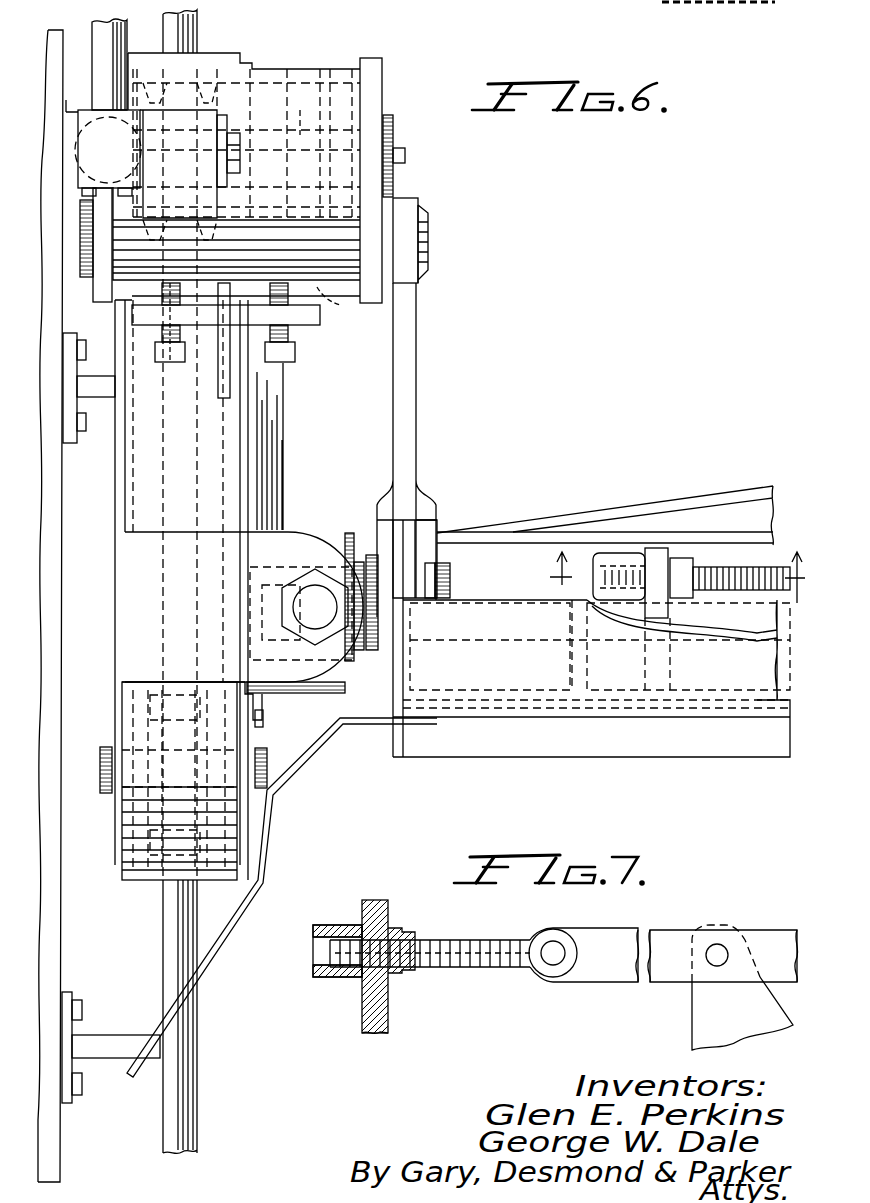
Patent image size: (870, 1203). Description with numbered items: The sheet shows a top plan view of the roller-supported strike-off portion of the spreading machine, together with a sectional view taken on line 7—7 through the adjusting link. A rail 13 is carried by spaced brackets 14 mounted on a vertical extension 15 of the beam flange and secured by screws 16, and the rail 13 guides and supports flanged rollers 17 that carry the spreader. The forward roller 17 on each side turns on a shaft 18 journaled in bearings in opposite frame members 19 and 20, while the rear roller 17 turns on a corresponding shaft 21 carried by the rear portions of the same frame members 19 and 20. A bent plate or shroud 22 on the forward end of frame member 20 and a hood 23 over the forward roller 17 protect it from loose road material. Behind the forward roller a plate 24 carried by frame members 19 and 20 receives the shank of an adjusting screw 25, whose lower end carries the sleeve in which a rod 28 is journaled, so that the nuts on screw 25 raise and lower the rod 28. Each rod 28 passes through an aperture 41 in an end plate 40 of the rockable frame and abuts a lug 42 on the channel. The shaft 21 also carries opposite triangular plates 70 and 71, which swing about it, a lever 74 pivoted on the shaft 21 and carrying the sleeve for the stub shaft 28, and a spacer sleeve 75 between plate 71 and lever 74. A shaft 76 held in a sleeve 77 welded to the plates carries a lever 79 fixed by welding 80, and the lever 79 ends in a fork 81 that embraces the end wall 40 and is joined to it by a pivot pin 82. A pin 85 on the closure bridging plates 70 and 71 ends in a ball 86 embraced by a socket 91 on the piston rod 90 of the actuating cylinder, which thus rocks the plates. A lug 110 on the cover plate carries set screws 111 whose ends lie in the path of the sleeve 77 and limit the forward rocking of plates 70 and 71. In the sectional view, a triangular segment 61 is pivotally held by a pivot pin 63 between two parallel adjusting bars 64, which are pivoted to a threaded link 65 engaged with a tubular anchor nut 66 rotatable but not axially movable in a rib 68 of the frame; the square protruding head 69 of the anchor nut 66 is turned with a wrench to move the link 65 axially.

In FIG. 6, the section line 7— 7 is at (667, 590).
In FIG. 6, the rail 13 is at (165, 930).
In FIG. 6, the bracket 14 is at (92, 398).
In FIG. 6, the vertical extension 15 is at (65, 450).
In FIG. 6, the screw 16 is at (72, 433).
In FIG. 6, the flanged roller 17 is at (158, 232).
In FIG. 6, the shaft 18 is at (267, 762).
In FIG. 6, the frame member 19 is at (115, 695).
In FIG. 6, the frame member 20 is at (245, 693).
In FIG. 6, the shaft 21 is at (322, 135).
In FIG. 6, the bent plate or shroud 22 is at (255, 880).
In FIG. 6, the hood 23 is at (150, 878).
In FIG. 6, the plate 24 is at (294, 548).
In FIG. 6, the adjusting screw 25 is at (310, 600).
In FIG. 6, the rod 28 is at (522, 642).
In FIG. 6, the end plate 40 is at (415, 652).
In FIG. 6, the aperture 41 is at (386, 655).
In FIG. 6, the lug 42 is at (587, 655).
In FIG. 7, the triangular segment 61 is at (692, 1010).
In FIG. 7, the pivot pin 63 is at (718, 946).
In FIG. 7, the adjusting bar 64 is at (605, 940).
In FIG. 7, the threaded link 65 is at (500, 966).
In FIG. 7, the tubular anchor nut 66 is at (396, 926).
In FIG. 6, the rib 68 is at (660, 612).
In FIG. 7, the rib 68 is at (390, 995).
In FIG. 6, the protruding head 69 is at (618, 558).
In FIG. 7, the protruding head 69 is at (333, 925).
In FIG. 6, the triangular shaped plate 70 is at (87, 300).
In FIG. 6, the triangular shaped plate 71 is at (383, 97).
In FIG. 6, the lever 74 is at (280, 452).
In FIG. 6, the spacer sleeve 75 is at (328, 135).
In FIG. 6, the shaft 76 is at (332, 290).
In FIG. 6, the sleeve 77 is at (320, 320).
In FIG. 6, the lever 79 is at (416, 375).
In FIG. 6, the welding 80 is at (425, 273).
In FIG. 6, the fork 81 is at (425, 522).
In FIG. 6, the pivot pin 82 is at (450, 578).
In FIG. 6, the pin 85 is at (238, 160).
In FIG. 6, the ball 86 is at (80, 135).
In FIG. 6, the piston rod 90 is at (92, 30).
In FIG. 6, the socket 91 is at (78, 115).
In FIG. 6, the lug 110 is at (300, 340).
In FIG. 6, the set screw 111 is at (182, 345).